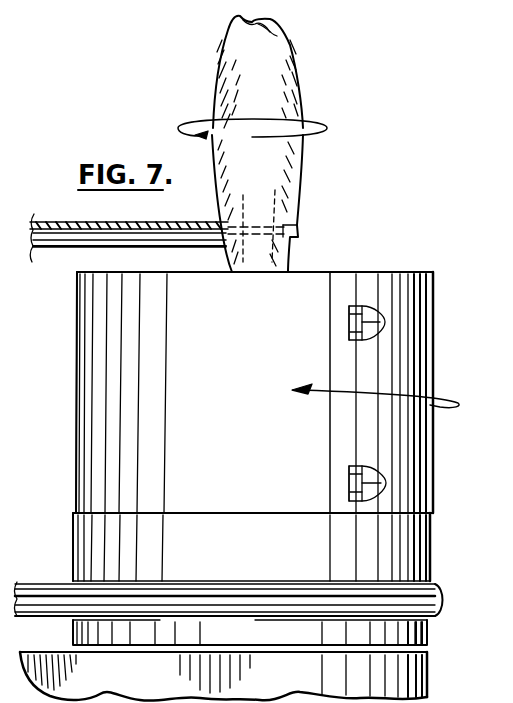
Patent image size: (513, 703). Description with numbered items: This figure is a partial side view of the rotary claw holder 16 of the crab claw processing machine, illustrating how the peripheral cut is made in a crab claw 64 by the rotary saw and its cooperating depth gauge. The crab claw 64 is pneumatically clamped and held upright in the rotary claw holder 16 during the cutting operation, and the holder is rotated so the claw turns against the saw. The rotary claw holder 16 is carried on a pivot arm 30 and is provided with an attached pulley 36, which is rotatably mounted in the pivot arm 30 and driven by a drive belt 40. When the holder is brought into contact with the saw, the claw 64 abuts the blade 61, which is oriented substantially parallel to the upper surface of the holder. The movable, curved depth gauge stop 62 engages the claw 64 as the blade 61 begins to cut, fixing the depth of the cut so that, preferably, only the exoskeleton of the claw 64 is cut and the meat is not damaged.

The rotary claw holder 16 is at (402, 290).
The pivot arm 30 is at (426, 674).
The pulley 36 is at (425, 553).
The drive belt 40 is at (56, 598).
The blade 61 is at (196, 222).
The depth gauge stop 62 is at (93, 245).
The crab claw 64 is at (297, 236).